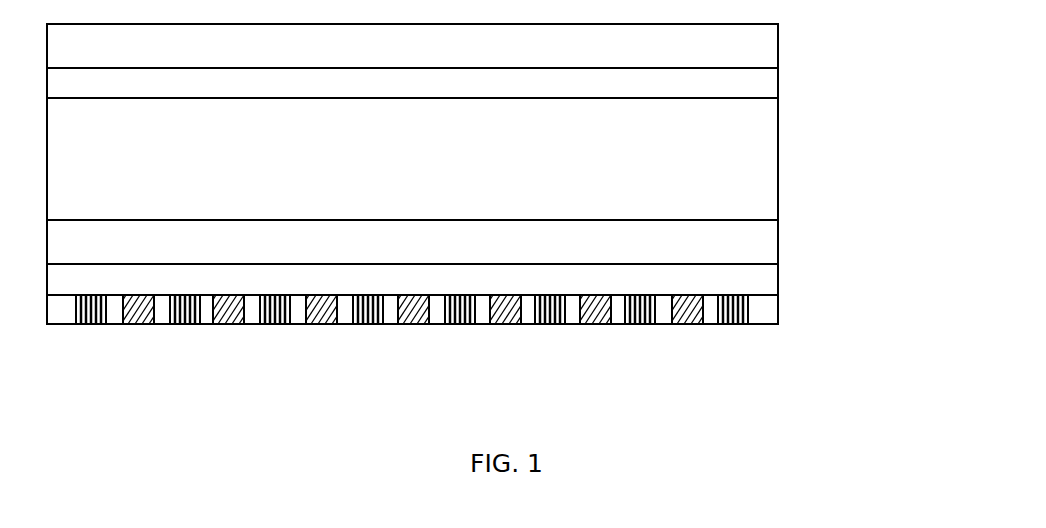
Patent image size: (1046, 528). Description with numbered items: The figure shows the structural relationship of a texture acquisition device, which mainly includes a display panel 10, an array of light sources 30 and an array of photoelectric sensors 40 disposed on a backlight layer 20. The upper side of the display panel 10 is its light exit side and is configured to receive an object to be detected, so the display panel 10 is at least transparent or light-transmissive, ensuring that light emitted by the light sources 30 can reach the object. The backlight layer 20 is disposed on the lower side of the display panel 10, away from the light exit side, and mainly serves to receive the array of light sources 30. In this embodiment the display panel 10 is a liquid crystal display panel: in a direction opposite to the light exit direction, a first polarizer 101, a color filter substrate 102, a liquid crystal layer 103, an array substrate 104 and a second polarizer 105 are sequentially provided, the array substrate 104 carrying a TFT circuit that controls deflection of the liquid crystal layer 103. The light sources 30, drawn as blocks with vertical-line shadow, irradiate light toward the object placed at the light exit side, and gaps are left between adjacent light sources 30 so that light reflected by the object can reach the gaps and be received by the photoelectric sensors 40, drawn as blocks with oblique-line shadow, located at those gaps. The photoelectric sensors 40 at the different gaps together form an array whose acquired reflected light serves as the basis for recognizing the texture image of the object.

The display panel 10 is at (900, 145).
The first polarizer 101 is at (760, 50).
The color filter substrate 102 is at (760, 89).
The liquid crystal layer 103 is at (760, 163).
The array substrate 104 is at (760, 243).
The second polarizer 105 is at (760, 284).
The backlight layer 20 is at (760, 318).
The light sources 30 is at (277, 313).
The photoelectric sensors 40 is at (502, 312).